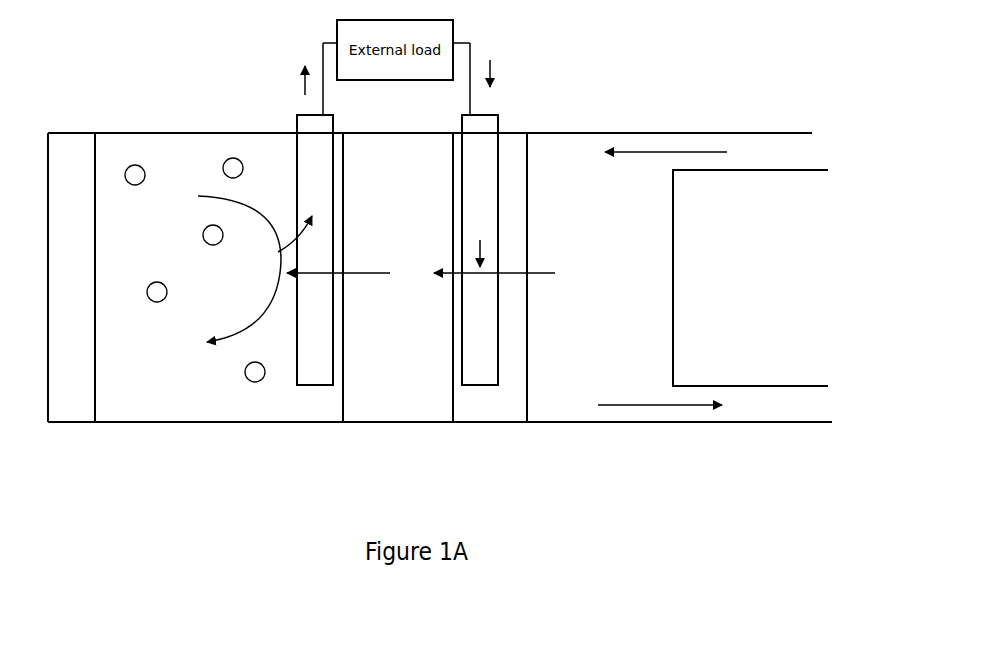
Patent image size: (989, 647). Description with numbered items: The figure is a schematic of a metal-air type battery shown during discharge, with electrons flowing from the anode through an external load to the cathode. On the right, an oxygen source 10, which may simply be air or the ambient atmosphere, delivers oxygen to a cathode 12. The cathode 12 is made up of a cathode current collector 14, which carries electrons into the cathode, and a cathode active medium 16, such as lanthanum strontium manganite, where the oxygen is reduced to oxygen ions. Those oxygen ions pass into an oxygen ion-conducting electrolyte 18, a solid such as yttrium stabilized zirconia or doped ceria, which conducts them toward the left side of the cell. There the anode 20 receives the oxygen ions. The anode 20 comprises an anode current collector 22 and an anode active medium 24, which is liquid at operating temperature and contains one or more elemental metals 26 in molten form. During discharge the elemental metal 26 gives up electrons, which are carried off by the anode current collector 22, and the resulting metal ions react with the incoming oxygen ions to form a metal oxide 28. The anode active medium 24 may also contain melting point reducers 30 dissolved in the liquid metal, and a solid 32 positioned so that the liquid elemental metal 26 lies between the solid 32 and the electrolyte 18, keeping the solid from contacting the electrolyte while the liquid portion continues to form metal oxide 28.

The oxygen source 10 is at (530, 426).
The cathode 12 is at (527, 428).
The cathode current collector 14 is at (490, 332).
The cathode active medium 16 is at (517, 375).
The oxygen ion-conducting electrolyte 18 is at (453, 428).
The anode 20 is at (340, 428).
The anode current collector 22 is at (317, 377).
The anode active medium 24 is at (292, 131).
The elemental metal 26 is at (140, 197).
The metal oxide 28 is at (146, 355).
The melting point reducer 30 is at (145, 172).
The solid 32 is at (92, 258).